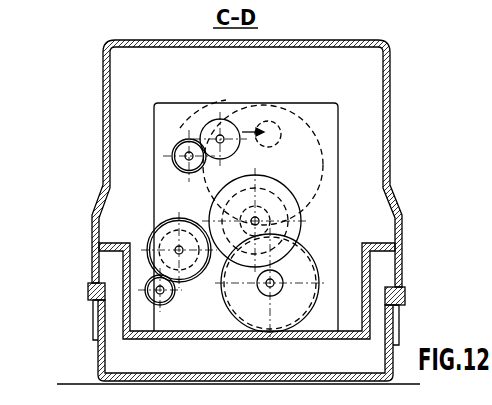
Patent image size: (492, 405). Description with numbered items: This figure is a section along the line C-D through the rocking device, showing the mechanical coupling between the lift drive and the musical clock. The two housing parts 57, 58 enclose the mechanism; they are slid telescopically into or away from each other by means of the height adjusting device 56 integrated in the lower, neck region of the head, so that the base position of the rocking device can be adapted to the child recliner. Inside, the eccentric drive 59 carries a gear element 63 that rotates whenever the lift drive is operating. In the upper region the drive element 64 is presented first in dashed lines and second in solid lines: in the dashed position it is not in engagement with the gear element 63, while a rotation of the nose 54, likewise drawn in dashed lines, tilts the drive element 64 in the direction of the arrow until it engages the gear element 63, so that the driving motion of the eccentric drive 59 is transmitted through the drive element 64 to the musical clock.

The nose 54 is at (292, 122).
The height adjusting device 56 is at (100, 292).
The housing part 57 is at (95, 238).
The housing part 58 is at (102, 360).
The eccentric drive 59 is at (133, 211).
The gear element 63 is at (186, 140).
The drive element 64 is at (266, 122).